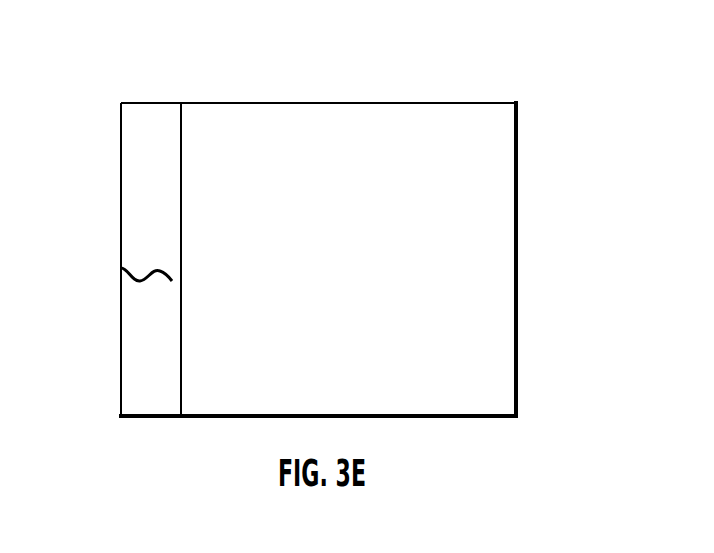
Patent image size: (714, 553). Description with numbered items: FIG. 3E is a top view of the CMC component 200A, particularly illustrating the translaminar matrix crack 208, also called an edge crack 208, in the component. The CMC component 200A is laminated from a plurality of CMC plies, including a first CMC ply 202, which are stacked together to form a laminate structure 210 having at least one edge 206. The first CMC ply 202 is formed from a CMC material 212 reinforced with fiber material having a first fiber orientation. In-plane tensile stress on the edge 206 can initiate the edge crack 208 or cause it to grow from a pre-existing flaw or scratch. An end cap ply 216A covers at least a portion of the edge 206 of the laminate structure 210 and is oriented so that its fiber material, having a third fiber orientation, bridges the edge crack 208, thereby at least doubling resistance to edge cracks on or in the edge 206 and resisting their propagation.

The CMC component 200A is at (340, 221).
The first CMC ply 202 is at (490, 357).
The edge 206 is at (172, 205).
The translaminar matrix crack 208 is at (153, 278).
The laminate structure 210 is at (319, 221).
The CMC material 212 is at (261, 118).
The end cap ply 216A is at (116, 259).